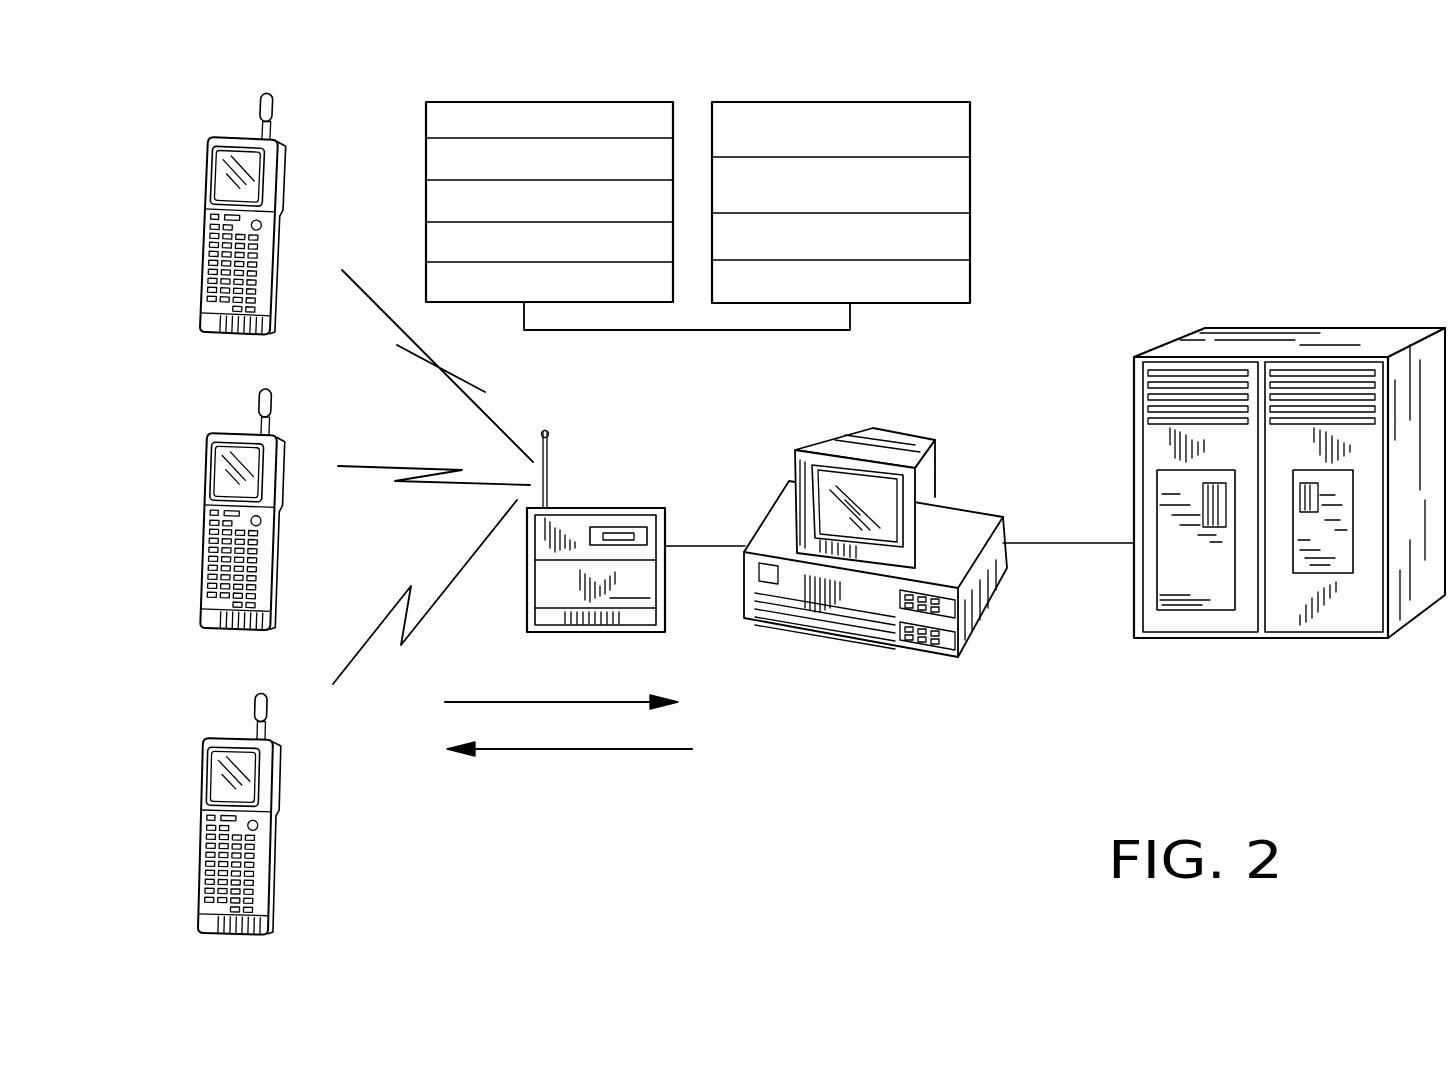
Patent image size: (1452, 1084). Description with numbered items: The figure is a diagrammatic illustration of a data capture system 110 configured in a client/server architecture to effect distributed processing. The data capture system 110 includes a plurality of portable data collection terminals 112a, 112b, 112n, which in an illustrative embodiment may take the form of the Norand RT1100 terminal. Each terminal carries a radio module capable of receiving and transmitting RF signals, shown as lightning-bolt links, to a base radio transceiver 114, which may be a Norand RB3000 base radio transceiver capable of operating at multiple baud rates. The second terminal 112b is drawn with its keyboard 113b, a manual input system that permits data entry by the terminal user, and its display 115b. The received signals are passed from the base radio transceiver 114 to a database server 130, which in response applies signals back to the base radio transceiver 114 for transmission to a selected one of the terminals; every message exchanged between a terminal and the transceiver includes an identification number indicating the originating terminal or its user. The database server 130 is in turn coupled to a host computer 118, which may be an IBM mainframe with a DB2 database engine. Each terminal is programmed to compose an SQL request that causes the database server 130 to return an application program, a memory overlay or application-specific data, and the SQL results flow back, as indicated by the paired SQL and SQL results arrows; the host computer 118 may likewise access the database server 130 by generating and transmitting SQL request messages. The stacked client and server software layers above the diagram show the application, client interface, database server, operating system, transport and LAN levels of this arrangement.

The data capture system 110 is at (997, 370).
The portable data collection terminal 112a is at (198, 192).
The portable data collection terminal 112b is at (293, 458).
The portable data collection terminal 112n is at (292, 789).
The keyboard 113b is at (197, 507).
The display 115b is at (215, 470).
The base radio transceiver 114 is at (624, 503).
The database server 130 is at (948, 452).
The host computer 118 is at (1370, 328).